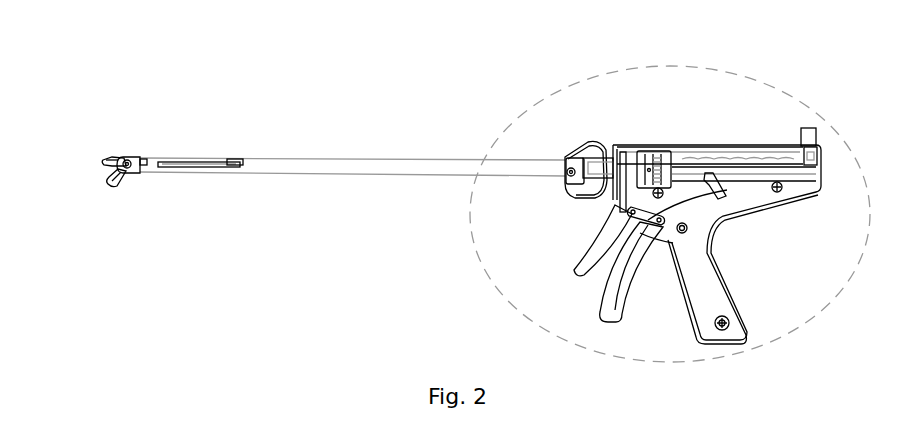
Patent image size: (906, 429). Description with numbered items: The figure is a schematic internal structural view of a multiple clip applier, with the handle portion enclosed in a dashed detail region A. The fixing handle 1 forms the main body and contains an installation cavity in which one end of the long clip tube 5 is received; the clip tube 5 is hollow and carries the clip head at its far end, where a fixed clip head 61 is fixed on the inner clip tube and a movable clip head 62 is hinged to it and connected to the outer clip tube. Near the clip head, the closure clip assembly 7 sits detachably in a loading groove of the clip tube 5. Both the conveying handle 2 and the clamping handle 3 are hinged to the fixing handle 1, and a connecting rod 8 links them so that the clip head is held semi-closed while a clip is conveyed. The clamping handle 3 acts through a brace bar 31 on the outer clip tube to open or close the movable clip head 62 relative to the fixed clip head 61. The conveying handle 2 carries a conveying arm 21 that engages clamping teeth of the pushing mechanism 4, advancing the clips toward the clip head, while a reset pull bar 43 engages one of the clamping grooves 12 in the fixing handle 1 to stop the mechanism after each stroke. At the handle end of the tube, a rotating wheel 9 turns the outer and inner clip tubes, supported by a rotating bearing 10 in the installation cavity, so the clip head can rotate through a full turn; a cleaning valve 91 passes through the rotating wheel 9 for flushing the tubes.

The fixing handle 1 is at (707, 270).
The conveying handle 2 is at (625, 287).
The clamping handle 3 is at (575, 268).
The pushing mechanism 4 is at (683, 170).
The clip tube 5 is at (362, 167).
The closure clip assembly 7 is at (187, 162).
The connecting rod 8 is at (630, 215).
The rotating wheel 9 is at (588, 167).
The rotating bearing 10 is at (653, 163).
The clamping grooves 12 is at (742, 148).
The conveying arm 21 is at (723, 183).
The brace bar 31 is at (617, 183).
The reset pull bar 43 is at (810, 142).
The fixed clip head 61 is at (105, 160).
The movable clip head 62 is at (110, 183).
The cleaning valve 91 is at (565, 160).
The detail region A is at (680, 63).